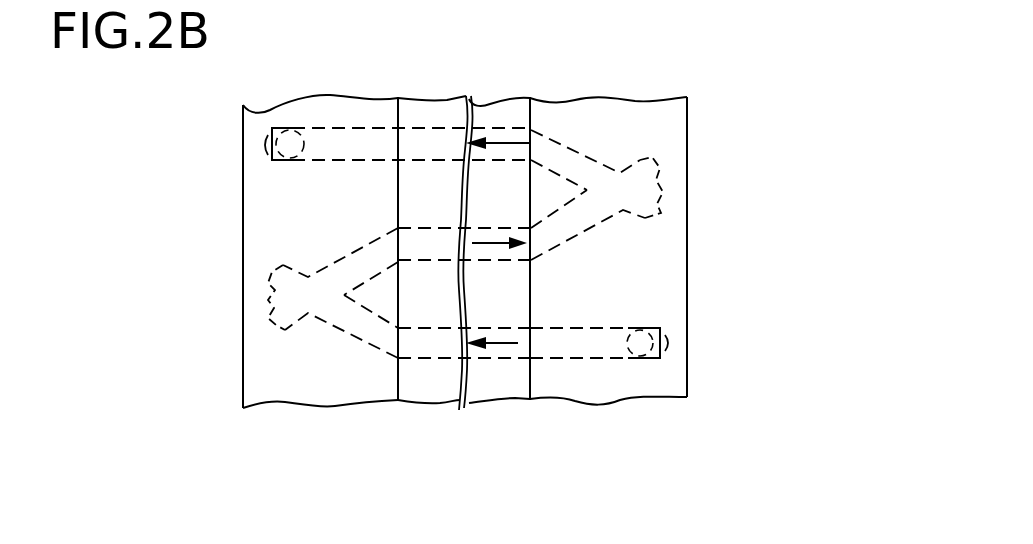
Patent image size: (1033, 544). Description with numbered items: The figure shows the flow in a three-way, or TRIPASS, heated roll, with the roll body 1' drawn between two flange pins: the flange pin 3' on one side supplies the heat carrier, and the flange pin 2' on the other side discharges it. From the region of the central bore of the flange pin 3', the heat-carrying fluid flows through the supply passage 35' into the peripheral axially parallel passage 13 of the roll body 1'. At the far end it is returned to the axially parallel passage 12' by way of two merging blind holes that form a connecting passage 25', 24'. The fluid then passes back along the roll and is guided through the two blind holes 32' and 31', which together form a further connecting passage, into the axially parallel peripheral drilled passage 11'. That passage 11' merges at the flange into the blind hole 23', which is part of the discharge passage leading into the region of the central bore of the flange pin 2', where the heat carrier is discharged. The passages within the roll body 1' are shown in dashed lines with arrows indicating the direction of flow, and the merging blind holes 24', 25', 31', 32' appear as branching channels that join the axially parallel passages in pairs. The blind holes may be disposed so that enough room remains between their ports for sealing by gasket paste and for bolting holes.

The roll body 1' is at (464, 294).
The flange pin 2' is at (279, 251).
The flange pin 3' is at (663, 251).
The axially parallel peripheral drilled passage 11' is at (468, 215).
The axially parallel passage 12' is at (464, 248).
The axially parallel passage 13 is at (505, 354).
The blind hole 23' is at (397, 94).
The blind hole 24' is at (279, 279).
The blind hole 25' is at (279, 343).
The blind hole 31' is at (600, 123).
The blind hole 32' is at (602, 238).
The supply passage 35' is at (612, 397).